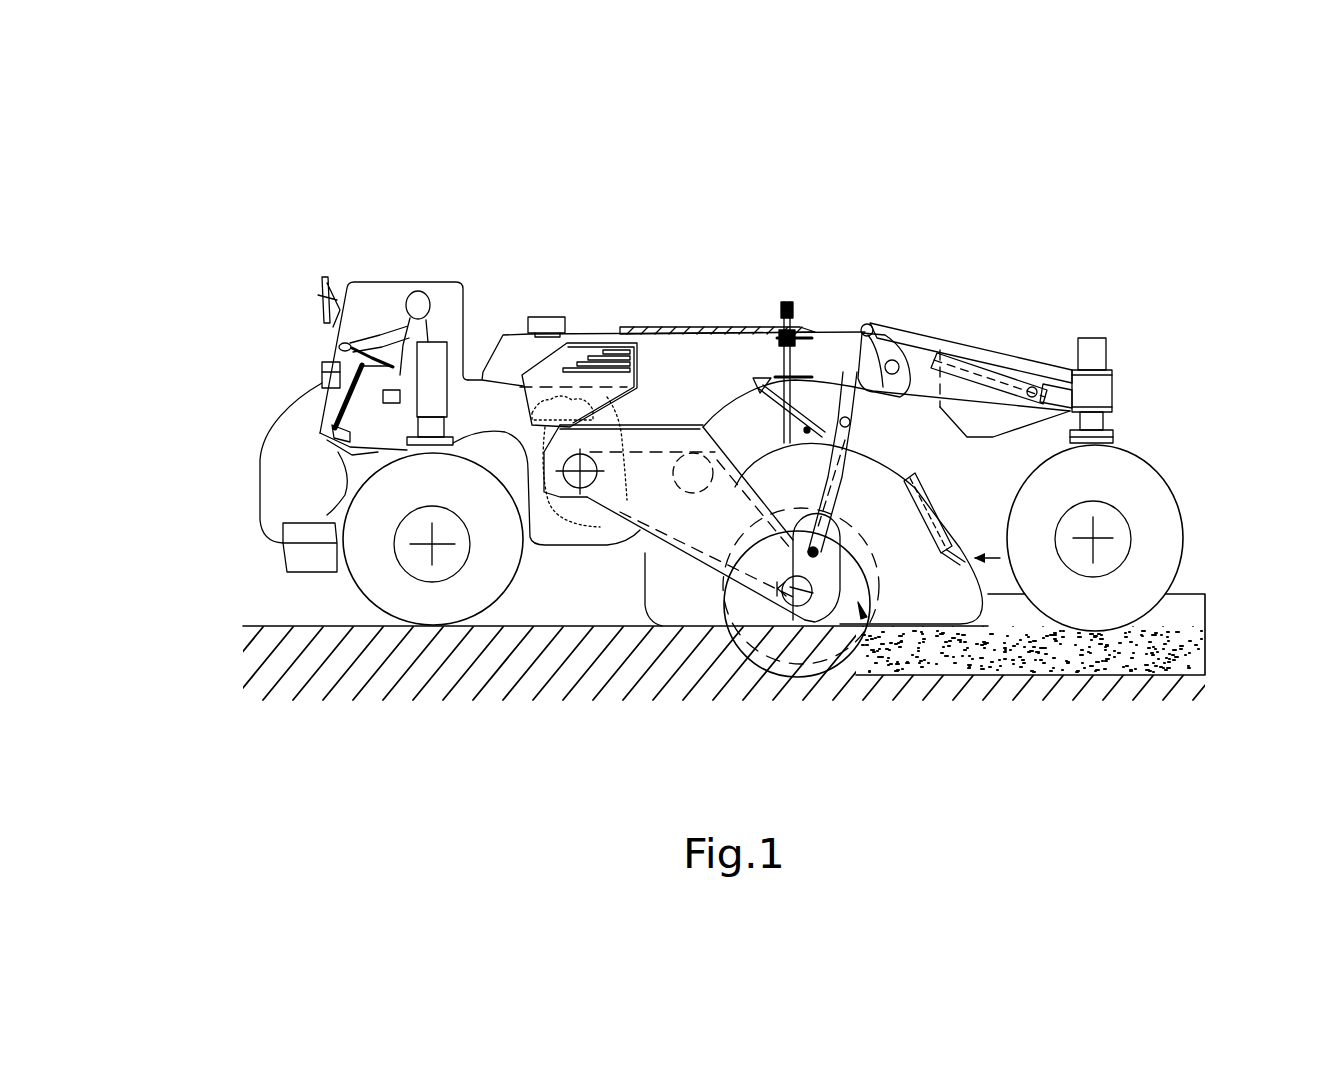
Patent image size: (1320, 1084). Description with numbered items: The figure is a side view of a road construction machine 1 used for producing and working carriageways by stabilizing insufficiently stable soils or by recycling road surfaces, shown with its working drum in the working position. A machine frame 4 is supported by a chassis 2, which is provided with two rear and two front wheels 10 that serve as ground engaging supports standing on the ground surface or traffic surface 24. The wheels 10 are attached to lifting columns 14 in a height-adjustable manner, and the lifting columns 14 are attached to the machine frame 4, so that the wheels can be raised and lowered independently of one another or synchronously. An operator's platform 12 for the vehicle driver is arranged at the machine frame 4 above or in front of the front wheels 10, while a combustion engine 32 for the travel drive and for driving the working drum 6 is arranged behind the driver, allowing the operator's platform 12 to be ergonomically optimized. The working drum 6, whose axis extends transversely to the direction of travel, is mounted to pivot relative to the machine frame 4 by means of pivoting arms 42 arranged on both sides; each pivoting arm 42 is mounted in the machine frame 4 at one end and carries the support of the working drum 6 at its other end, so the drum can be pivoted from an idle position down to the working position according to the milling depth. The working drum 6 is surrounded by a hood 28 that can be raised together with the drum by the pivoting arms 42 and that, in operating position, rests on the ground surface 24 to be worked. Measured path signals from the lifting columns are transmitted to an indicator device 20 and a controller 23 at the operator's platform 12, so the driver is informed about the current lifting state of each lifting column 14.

The road construction machine 1 is at (685, 268).
The chassis 2 is at (1144, 377).
The machine frame 4 is at (726, 362).
The working drum 6 is at (723, 627).
The wheels 10 is at (490, 548).
The operator's platform 12 is at (426, 256).
The lifting columns 14 is at (433, 363).
The indicator device 20 is at (322, 367).
The controller 23 is at (322, 383).
The ground surface or traffic surface 24 is at (268, 627).
The hood 28 is at (898, 463).
The combustion engine 32 is at (607, 420).
The pivoting arms 42 is at (657, 627).